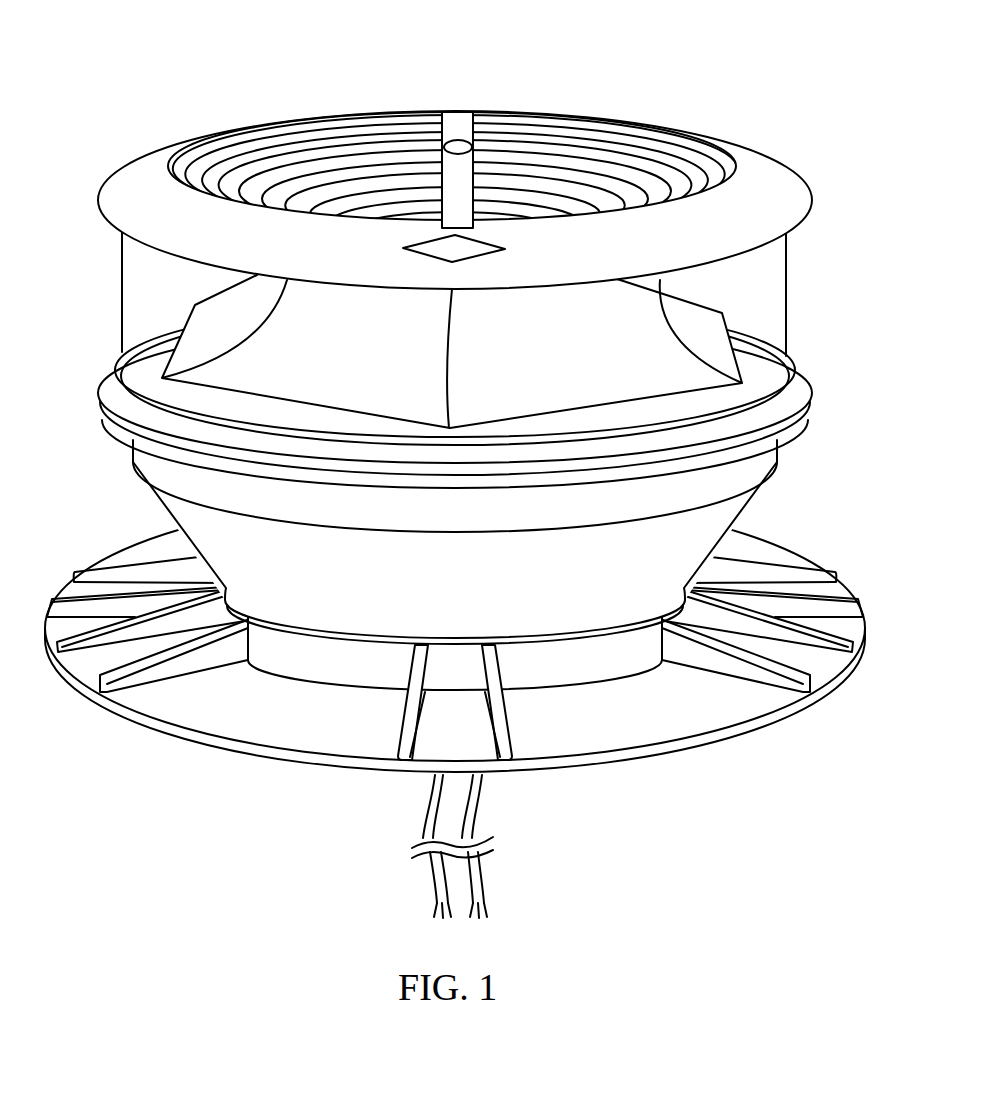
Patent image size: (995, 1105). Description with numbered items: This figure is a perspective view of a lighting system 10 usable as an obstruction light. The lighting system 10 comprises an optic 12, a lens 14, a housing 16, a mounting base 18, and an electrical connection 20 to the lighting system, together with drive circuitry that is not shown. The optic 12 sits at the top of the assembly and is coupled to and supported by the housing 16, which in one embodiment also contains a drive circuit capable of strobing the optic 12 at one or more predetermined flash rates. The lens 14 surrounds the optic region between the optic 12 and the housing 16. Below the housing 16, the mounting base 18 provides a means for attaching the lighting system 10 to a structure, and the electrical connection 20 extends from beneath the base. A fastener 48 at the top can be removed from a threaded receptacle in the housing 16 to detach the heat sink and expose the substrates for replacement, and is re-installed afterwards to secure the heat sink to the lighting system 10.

The lighting system 10 is at (666, 71).
The optic 12 is at (733, 293).
The lens 14 is at (786, 323).
The housing 16 is at (157, 467).
The mounting base 18 is at (295, 738).
The electrical connection 20 is at (505, 866).
The fastener 48 is at (458, 146).